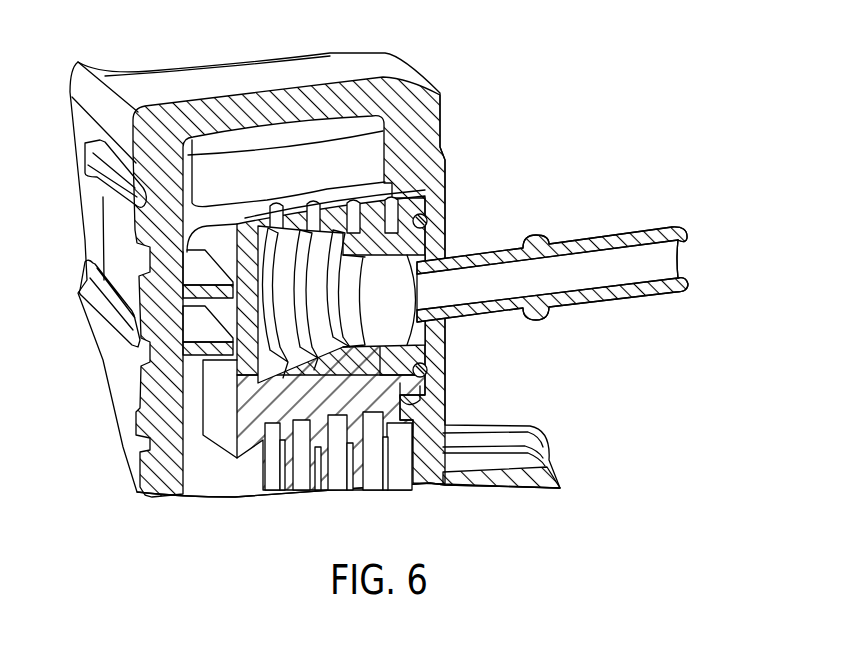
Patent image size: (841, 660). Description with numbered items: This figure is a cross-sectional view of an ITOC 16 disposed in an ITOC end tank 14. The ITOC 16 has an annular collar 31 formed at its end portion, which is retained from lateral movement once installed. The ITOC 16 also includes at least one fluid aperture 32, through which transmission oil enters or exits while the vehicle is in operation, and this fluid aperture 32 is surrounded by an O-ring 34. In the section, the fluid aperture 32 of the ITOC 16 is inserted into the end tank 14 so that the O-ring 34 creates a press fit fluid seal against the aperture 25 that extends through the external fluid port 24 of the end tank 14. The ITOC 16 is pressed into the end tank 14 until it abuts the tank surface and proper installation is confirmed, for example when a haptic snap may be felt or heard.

The ITOC end tank 14 is at (458, 133).
The ITOC 16 is at (247, 441).
The external fluid port 24 is at (596, 244).
The aperture 25 is at (628, 282).
The annular collar 31 is at (420, 206).
The fluid aperture 32 is at (406, 303).
The O-ring 34 is at (427, 366).